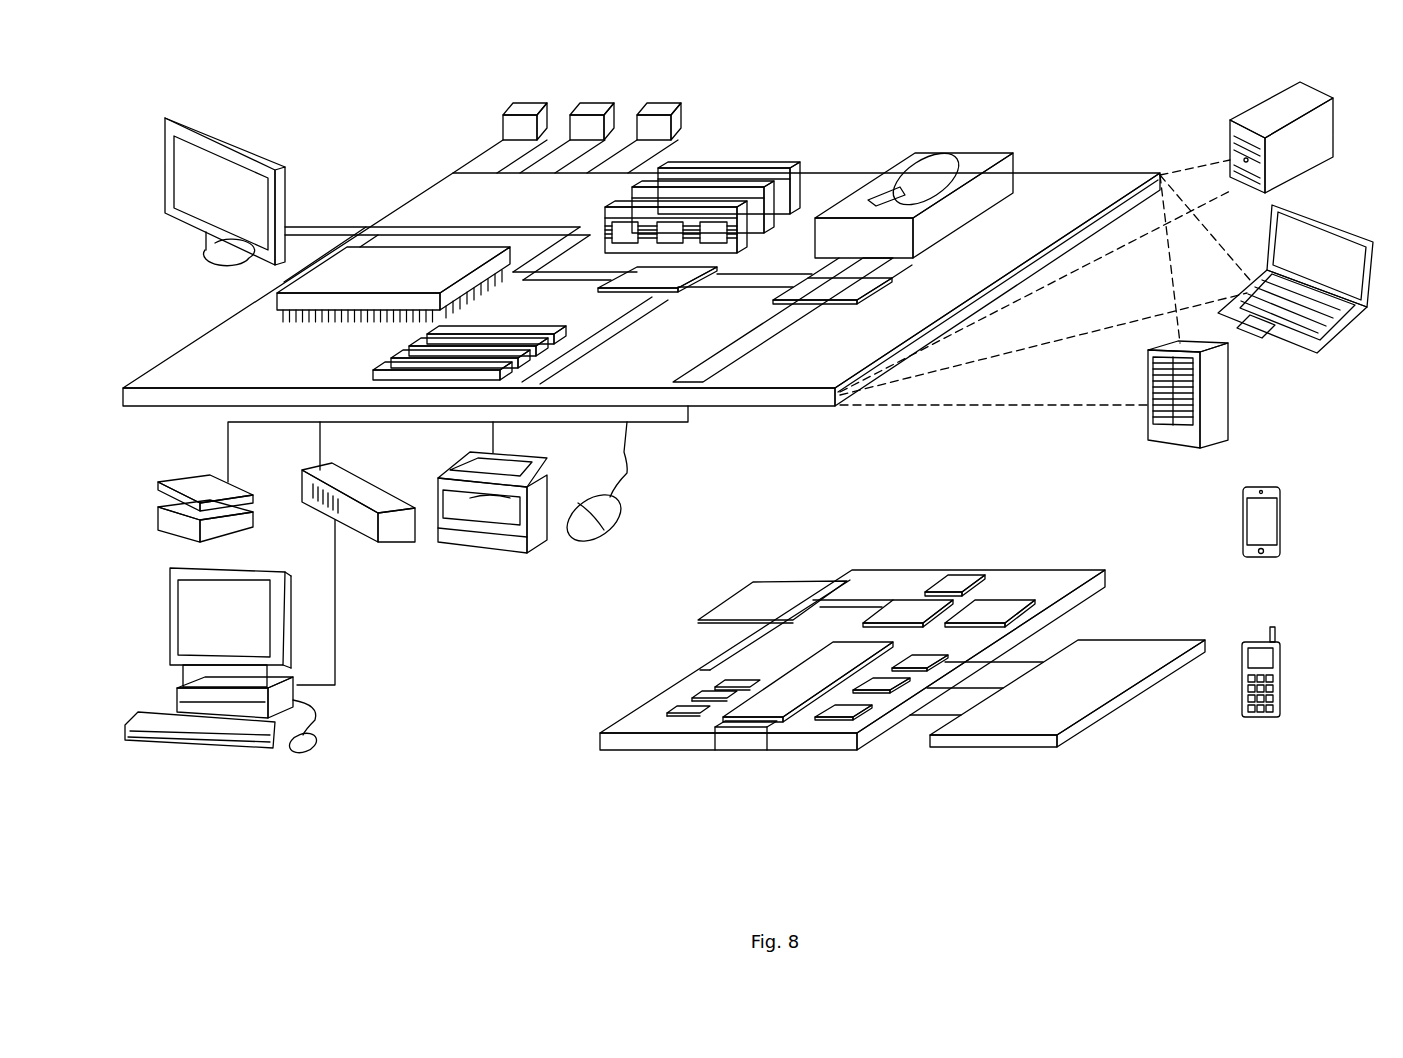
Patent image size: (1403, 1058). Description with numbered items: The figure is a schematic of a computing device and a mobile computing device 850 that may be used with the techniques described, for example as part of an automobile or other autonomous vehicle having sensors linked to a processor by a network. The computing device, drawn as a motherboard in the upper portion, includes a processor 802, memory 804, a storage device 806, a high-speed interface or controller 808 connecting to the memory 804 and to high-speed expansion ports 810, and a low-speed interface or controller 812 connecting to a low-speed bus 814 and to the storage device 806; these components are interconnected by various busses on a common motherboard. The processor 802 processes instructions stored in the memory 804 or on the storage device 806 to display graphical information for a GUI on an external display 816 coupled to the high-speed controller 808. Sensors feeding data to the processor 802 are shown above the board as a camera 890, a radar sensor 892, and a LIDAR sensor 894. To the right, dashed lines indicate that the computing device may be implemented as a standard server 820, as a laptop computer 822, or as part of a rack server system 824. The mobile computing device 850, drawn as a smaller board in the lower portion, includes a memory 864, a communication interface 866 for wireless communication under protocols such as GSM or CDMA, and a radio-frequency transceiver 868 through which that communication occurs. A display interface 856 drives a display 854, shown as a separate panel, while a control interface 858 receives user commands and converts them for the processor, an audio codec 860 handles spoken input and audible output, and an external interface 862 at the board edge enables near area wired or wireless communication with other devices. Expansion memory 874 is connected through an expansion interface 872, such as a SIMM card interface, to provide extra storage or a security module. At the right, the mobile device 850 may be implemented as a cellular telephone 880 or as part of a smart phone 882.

The processor 802 is at (283, 278).
The memory 804 is at (730, 168).
The storage device 806 is at (963, 153).
The high-speed interface or controller 808 is at (673, 282).
The high-speed expansion ports 810 is at (397, 348).
The low-speed interface or controller 812 is at (838, 293).
The low-speed bus 814 is at (697, 360).
The display 816 is at (238, 137).
The standard server 820 is at (1265, 99).
The laptop computer 822 is at (1347, 227).
The rack server system 824 is at (1230, 410).
The mobile computing device 850 is at (583, 757).
The display 854 is at (1107, 657).
The display interface 856 is at (840, 718).
The control interface 858 is at (883, 693).
The audio codec 860 is at (928, 662).
The external interface 862 is at (750, 738).
The memory 864 is at (690, 690).
The communication interface 866 is at (900, 600).
The transceiver 868 is at (1007, 600).
The expansion interface 872 is at (835, 578).
The expansion memory 874 is at (752, 578).
The cellular telephone 880 is at (1283, 520).
The smart phone 882 is at (1283, 663).
The camera 890 is at (528, 102).
The radar sensor 892 is at (593, 102).
The LIDAR sensor 894 is at (656, 102).